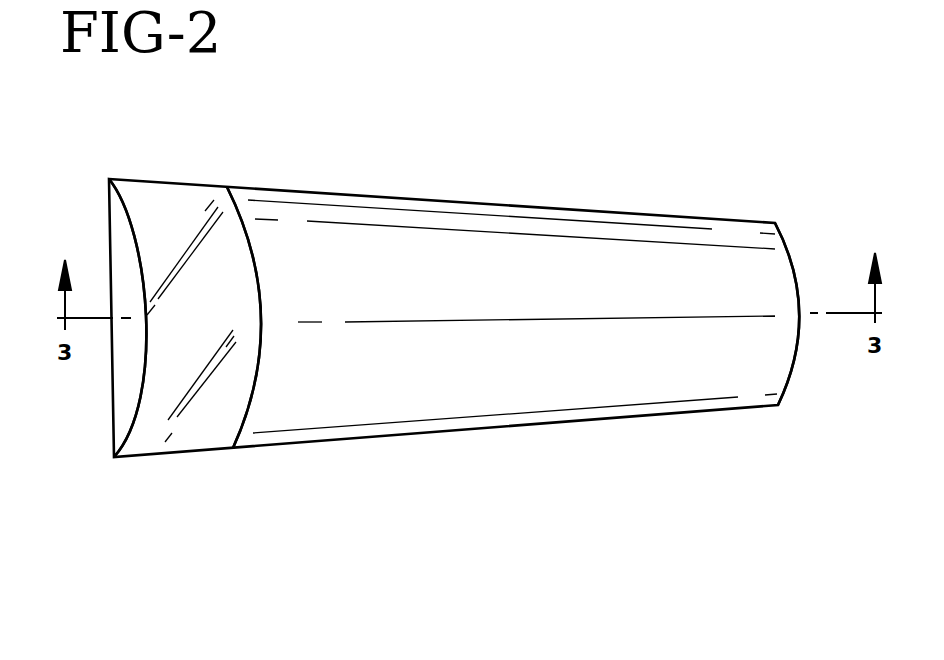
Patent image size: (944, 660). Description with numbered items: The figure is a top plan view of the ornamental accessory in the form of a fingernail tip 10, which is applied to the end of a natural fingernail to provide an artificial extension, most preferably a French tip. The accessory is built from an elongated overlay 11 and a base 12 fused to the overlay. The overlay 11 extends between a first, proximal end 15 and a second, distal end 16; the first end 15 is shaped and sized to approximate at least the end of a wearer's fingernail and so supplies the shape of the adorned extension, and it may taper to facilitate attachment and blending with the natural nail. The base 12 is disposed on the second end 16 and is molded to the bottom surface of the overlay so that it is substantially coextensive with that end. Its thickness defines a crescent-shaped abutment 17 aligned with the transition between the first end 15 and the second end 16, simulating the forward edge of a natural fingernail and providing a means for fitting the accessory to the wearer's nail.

The fingernail tip 10 is at (612, 520).
The overlay 11 is at (167, 198).
The base 12 is at (402, 221).
The first end 15 is at (147, 426).
The second end 16 is at (757, 367).
The abutment 17 is at (251, 388).